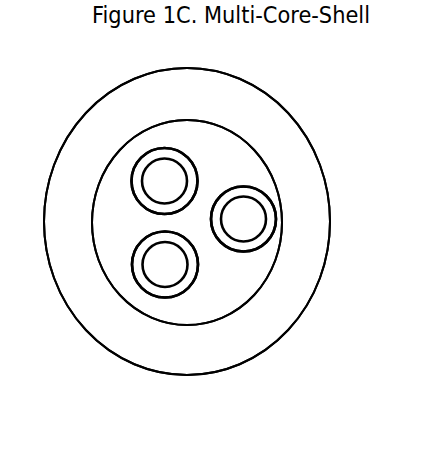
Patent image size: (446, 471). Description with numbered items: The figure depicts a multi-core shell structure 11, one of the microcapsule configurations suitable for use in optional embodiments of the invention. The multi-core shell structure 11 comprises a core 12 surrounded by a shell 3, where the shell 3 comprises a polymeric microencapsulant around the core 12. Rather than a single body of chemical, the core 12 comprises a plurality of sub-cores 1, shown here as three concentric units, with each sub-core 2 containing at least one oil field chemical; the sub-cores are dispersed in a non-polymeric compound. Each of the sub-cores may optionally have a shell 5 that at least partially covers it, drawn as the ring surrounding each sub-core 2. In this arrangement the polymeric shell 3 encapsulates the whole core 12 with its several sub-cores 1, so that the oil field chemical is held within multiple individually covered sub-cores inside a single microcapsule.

The sub-core 1 is at (192, 220).
The sub-core 2 is at (204, 223).
The shell 3 is at (73, 287).
The shell 5 is at (212, 219).
The multi-core shell structure 11 is at (335, 267).
The core 12 is at (190, 300).